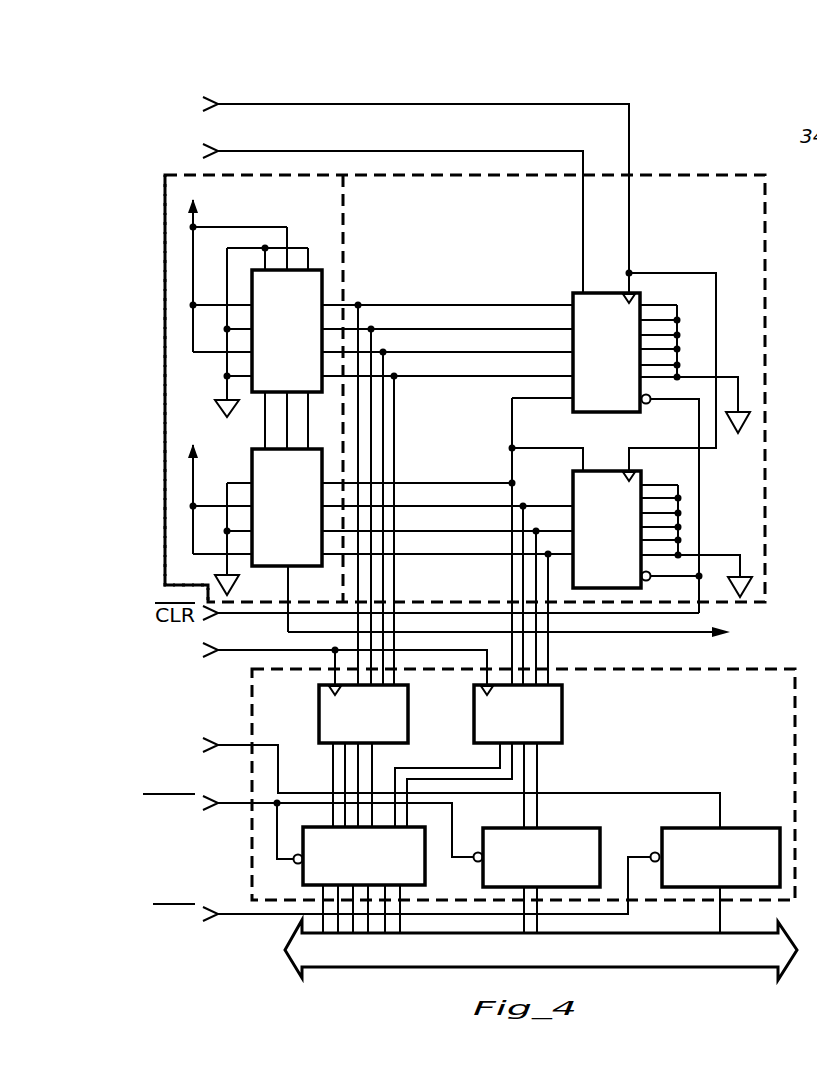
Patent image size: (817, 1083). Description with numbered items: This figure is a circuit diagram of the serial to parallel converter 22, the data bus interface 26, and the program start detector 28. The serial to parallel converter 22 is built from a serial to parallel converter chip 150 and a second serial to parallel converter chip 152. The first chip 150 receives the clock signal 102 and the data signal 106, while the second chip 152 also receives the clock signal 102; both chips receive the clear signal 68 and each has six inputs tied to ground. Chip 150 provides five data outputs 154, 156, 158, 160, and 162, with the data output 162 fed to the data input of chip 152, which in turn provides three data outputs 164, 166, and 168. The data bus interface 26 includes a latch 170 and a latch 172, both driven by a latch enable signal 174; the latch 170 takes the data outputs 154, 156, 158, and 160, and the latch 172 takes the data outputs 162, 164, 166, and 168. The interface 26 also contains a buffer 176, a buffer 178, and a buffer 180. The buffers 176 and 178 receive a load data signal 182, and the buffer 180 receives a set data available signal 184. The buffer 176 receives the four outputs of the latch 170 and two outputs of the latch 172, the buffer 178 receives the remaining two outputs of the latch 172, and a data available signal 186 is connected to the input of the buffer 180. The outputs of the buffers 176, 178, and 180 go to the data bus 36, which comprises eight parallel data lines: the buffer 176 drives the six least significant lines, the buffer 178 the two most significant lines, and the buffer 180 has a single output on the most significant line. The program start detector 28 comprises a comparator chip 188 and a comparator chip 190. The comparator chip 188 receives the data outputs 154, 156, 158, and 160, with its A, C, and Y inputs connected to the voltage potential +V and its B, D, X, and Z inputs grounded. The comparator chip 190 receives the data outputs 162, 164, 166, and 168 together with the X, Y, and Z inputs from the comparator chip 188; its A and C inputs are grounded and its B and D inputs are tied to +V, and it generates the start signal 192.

The serial to parallel converter 22 is at (700, 175).
The data bus interface 26 is at (578, 667).
The program start detector 28 is at (165, 325).
The data bus 36 is at (622, 968).
The clear signal 68 is at (273, 632).
The clock signal 102 is at (336, 104).
The data signal 106 is at (336, 151).
The serial to parallel converter chip 150 is at (571, 293).
The serial to parallel converter chip 152 is at (603, 471).
The data output 154 is at (487, 303).
The data output 156 is at (487, 327).
The data output 158 is at (487, 350).
The data output 160 is at (487, 374).
The data output 162 is at (510, 413).
The data output 164 is at (487, 505).
The data output 166 is at (487, 530).
The data output 168 is at (487, 553).
The latch 170 is at (409, 718).
The latch 172 is at (562, 718).
The latch enable signal 174 is at (258, 652).
The buffer 176 is at (425, 855).
The buffer 178 is at (560, 828).
The buffer 180 is at (740, 828).
The load data signal 182 is at (238, 802).
The set data available signal 184 is at (231, 913).
The data available signal 186 is at (231, 744).
The comparator chip 188 is at (316, 268).
The comparator chip 190 is at (250, 462).
The start signal 192 is at (660, 634).